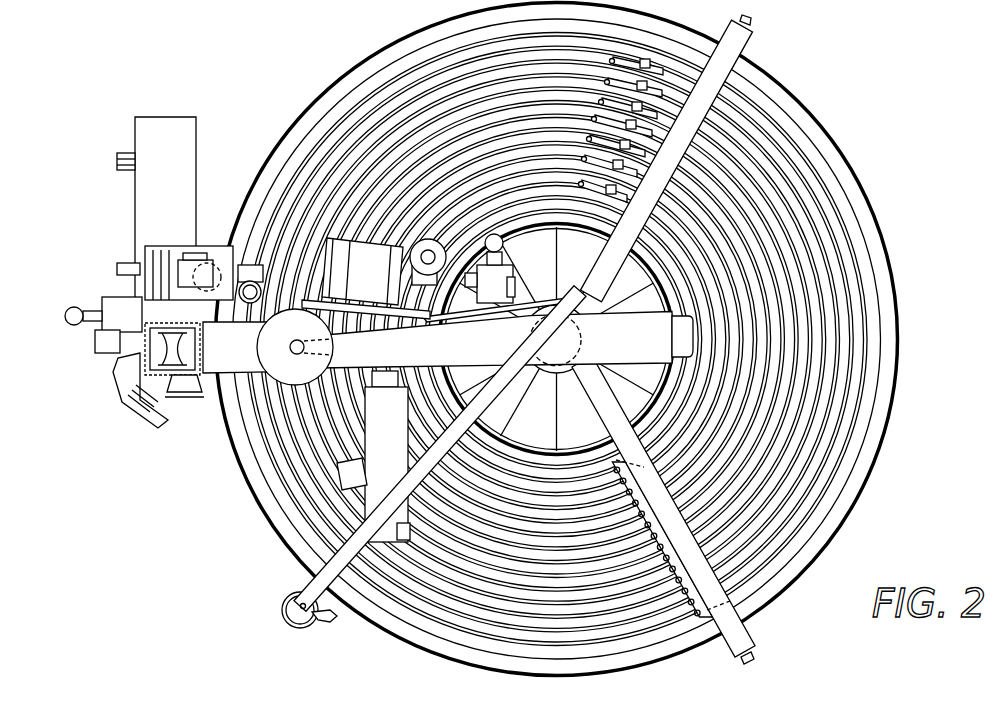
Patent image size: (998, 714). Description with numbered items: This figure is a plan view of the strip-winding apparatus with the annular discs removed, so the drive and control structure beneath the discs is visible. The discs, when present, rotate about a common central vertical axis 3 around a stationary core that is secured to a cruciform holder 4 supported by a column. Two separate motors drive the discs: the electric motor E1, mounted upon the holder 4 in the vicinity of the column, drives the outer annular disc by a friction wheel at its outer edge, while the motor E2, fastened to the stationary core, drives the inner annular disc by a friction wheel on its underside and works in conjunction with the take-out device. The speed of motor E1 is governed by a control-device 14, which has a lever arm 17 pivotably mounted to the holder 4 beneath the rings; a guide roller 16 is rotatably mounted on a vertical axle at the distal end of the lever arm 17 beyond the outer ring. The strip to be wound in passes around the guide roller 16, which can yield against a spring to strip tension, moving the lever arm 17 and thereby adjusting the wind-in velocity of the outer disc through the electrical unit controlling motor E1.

The central vertical axis 3 is at (582, 340).
The cruciform holder 4 is at (225, 365).
The control-device 14 is at (273, 618).
The guide roller 16 is at (298, 625).
The lever arm 17 is at (317, 558).
The electric motor E1 is at (180, 252).
The motor E2 is at (342, 236).